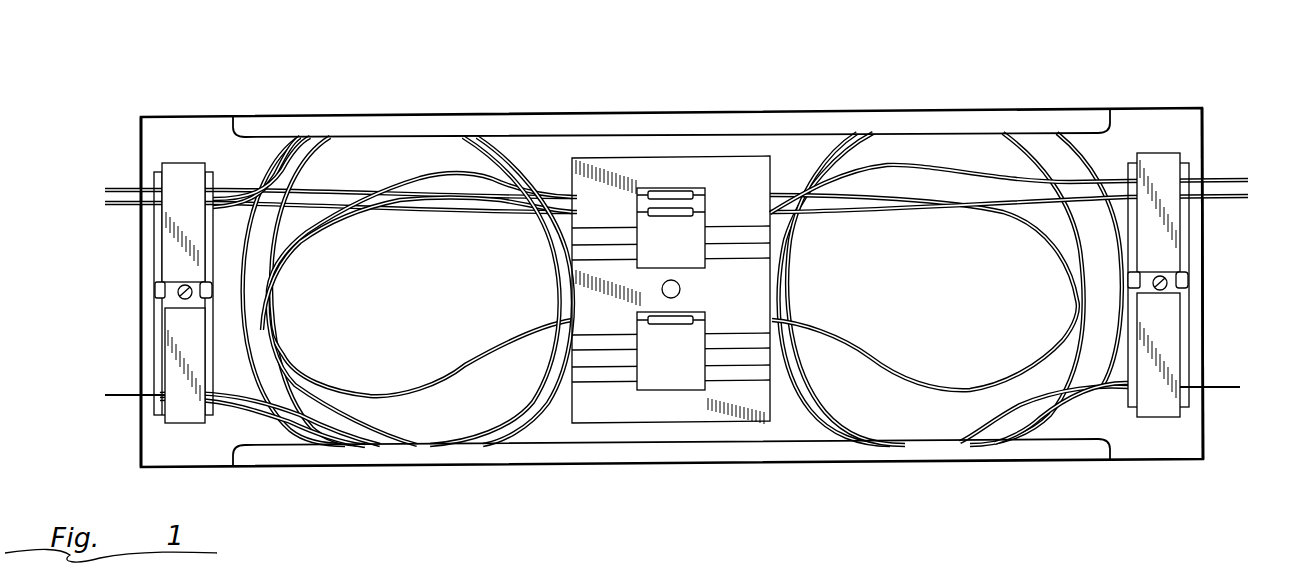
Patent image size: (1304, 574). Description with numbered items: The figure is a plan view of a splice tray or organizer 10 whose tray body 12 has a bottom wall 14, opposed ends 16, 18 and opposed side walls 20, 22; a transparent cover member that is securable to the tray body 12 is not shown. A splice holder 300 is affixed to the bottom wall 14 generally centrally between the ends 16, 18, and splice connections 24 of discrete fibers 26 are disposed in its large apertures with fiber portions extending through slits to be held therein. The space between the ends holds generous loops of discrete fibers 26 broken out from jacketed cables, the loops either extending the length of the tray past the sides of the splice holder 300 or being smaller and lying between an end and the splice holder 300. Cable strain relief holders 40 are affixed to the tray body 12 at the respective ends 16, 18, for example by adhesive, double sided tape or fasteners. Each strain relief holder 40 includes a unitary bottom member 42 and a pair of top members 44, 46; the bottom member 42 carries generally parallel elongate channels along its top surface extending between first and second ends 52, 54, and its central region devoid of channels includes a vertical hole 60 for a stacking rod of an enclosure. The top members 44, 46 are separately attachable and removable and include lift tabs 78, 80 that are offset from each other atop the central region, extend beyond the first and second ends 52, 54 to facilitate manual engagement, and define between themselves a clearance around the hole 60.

The splice tray 10 is at (202, 88).
The tray body 12 is at (227, 117).
The bottom wall 14 is at (457, 140).
The end 16 is at (160, 132).
The end 18 is at (1203, 152).
The side wall 20 is at (837, 122).
The side wall 22 is at (812, 453).
The splice connection 24 is at (690, 208).
The discrete fibers 26 is at (543, 320).
The cable strain relief holder 40 is at (155, 367).
The bottom member 42 is at (160, 310).
The top member 44 is at (185, 180).
The top member 46 is at (195, 342).
The first end 52 is at (157, 233).
The second end 54 is at (210, 235).
The vertical hole 60 is at (160, 322).
The lift tab 78 is at (160, 292).
The lift tab 80 is at (220, 300).
The splice holder 300 is at (723, 157).